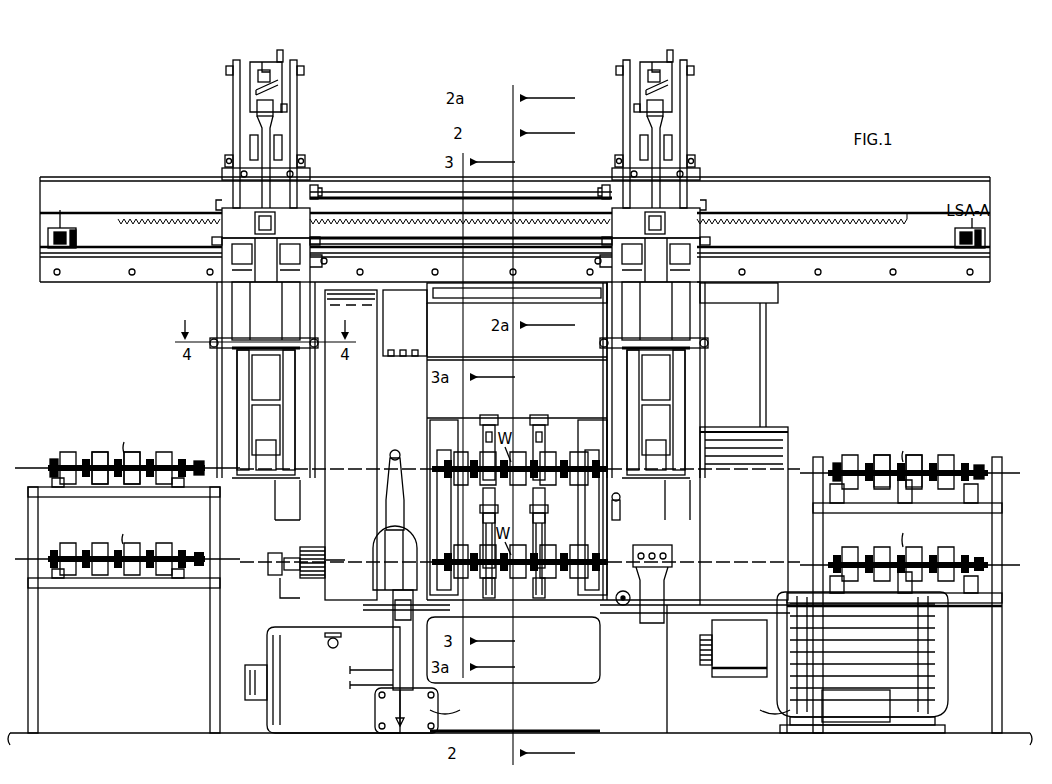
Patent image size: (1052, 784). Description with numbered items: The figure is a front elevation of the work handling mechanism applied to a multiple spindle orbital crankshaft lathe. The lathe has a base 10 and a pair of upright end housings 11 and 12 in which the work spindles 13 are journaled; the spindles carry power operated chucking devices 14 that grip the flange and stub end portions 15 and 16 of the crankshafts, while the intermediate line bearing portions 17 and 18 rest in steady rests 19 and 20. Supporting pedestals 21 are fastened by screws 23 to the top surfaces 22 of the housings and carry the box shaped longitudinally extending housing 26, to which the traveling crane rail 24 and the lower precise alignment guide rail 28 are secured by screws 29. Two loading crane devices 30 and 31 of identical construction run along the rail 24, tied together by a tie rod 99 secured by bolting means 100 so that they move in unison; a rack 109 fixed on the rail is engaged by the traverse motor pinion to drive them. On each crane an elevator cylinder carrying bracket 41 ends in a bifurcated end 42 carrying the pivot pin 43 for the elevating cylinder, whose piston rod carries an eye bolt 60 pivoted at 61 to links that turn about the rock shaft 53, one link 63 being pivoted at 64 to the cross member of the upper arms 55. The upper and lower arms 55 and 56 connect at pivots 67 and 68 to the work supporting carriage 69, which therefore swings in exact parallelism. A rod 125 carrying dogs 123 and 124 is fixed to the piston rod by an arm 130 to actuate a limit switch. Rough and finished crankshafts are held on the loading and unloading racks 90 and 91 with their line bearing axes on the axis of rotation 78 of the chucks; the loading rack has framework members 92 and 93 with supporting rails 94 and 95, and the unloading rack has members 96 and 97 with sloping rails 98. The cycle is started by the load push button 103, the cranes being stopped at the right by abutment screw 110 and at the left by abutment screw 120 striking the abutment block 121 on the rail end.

The base 10 is at (667, 704).
The upright end housing 11 is at (380, 418).
The upright end housing 12 is at (622, 398).
The work spindles 13 is at (385, 478).
The power operated chucking devices 14 is at (435, 432).
The flange end portion 15 is at (56, 460).
The stub end portion 16 is at (197, 462).
The intermediate line bearing portion 17 is at (102, 452).
The intermediate line bearing portion 18 is at (146, 452).
The steady rest 19 is at (480, 432).
The steady rest 20 is at (541, 432).
The supporting pedestals 21 is at (427, 303).
The top surfaces 22 is at (427, 360).
The screws 23 is at (389, 352).
The traveling crane rail 24 is at (174, 238).
The box shaped longitudinally extending housing 26 is at (868, 283).
The lower precise alignment guide rail 28 is at (92, 283).
The screws 29 is at (206, 272).
The loading crane device 30 is at (233, 150).
The loading crane device 31 is at (692, 152).
The elevator cylinder carrying bracket 41 is at (226, 161).
The bifurcated end 42 is at (233, 85).
The pivot pin 43 is at (304, 72).
The rock shaft 53 is at (318, 186).
The upper arms 55 is at (216, 208).
The lower arms 56 is at (219, 324).
The eye bolt 60 is at (257, 108).
The pivot 61 is at (287, 108).
The link 63 is at (264, 148).
The pivotal connection 64 is at (255, 222).
The pivotal connection 67 is at (326, 264).
The pivotal connection 68 is at (214, 347).
The work supporting carriage 69 is at (237, 402).
The axis of rotation 78 is at (730, 468).
The loading rack 90 is at (936, 455).
The unloading rack 91 is at (85, 450).
The rack supporting member 92 is at (815, 546).
The rack supporting member 93 is at (1002, 509).
The supporting rail 94 is at (866, 488).
The supporting rail 95 is at (878, 503).
The supporting member 96 is at (28, 523).
The supporting member 97 is at (30, 493).
The rails 98 is at (58, 488).
The tie rod 99 is at (524, 199).
The bolting means 100 is at (282, 246).
The load push button 103 is at (645, 548).
The rack 109 is at (824, 226).
The abutment screw 110 is at (710, 241).
The abutment screw 120 is at (212, 240).
The abutment block 121 is at (76, 236).
The dog 123 is at (282, 92).
The dog 124 is at (280, 60).
The rod 125 is at (275, 62).
The arm 130 is at (272, 96).